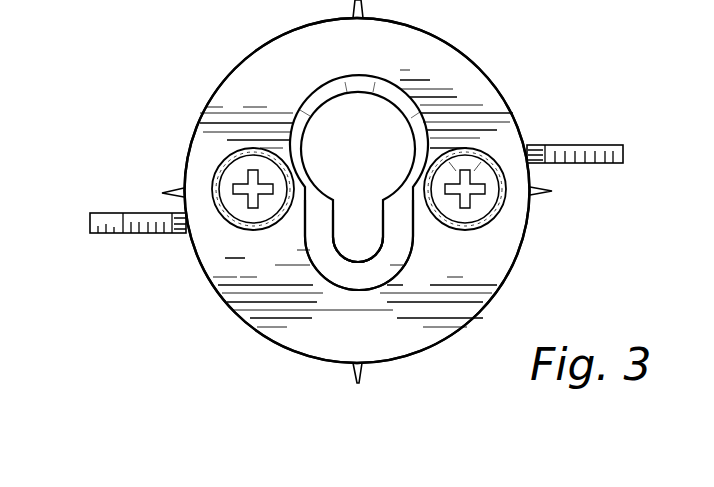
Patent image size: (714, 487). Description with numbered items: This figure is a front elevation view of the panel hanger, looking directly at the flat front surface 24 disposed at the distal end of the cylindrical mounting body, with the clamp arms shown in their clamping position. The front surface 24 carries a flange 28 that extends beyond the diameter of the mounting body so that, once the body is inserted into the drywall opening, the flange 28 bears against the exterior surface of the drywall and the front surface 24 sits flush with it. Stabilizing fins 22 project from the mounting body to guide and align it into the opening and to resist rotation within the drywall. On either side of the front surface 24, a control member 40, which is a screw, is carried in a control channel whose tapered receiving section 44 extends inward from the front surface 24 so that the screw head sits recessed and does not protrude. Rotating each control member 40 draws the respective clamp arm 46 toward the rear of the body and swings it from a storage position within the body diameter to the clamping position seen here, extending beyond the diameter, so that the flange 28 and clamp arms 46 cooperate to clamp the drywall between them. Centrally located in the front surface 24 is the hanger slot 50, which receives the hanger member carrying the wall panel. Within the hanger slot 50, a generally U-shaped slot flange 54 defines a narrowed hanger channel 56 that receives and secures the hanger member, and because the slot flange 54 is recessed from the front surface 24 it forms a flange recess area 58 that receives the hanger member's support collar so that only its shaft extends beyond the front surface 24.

The stabilizing fin 22 is at (358, 383).
The front surface 24 is at (443, 53).
The flange 28 is at (497, 82).
The control member 40 is at (240, 215).
The tapered receiving section 44 is at (213, 178).
The clamp arm 46 is at (95, 213).
The hanger slot 50 is at (333, 130).
The slot flange 54 is at (413, 263).
The narrowed hanger channel 56 is at (355, 242).
The flange recess area 58 is at (368, 267).